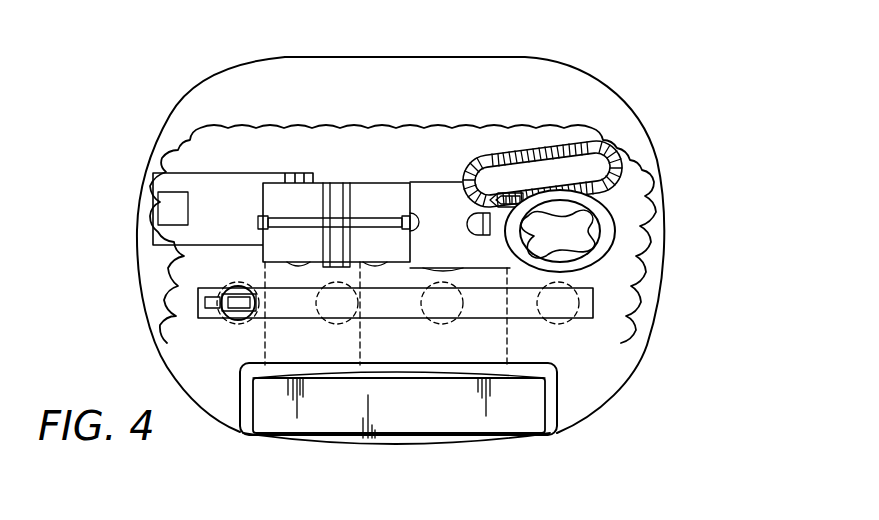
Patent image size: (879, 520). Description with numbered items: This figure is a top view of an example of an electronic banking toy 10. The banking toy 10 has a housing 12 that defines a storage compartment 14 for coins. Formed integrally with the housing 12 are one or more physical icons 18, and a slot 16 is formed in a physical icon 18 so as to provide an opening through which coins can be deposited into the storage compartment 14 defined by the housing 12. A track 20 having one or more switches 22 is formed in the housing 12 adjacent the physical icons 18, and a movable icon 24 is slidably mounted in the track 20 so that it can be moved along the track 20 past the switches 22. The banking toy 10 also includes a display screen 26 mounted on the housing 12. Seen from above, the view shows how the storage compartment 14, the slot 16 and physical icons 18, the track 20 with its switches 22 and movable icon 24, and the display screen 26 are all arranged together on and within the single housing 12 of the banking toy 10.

The electronic banking toy 10 is at (660, 62).
The housing 12 is at (193, 103).
The storage compartment 14 is at (229, 90).
The slot 16 is at (303, 220).
The physical icons 18 is at (543, 220).
The track 20 is at (277, 313).
The switches 22 is at (360, 330).
The movable icon 24 is at (205, 294).
The display screen 26 is at (498, 424).